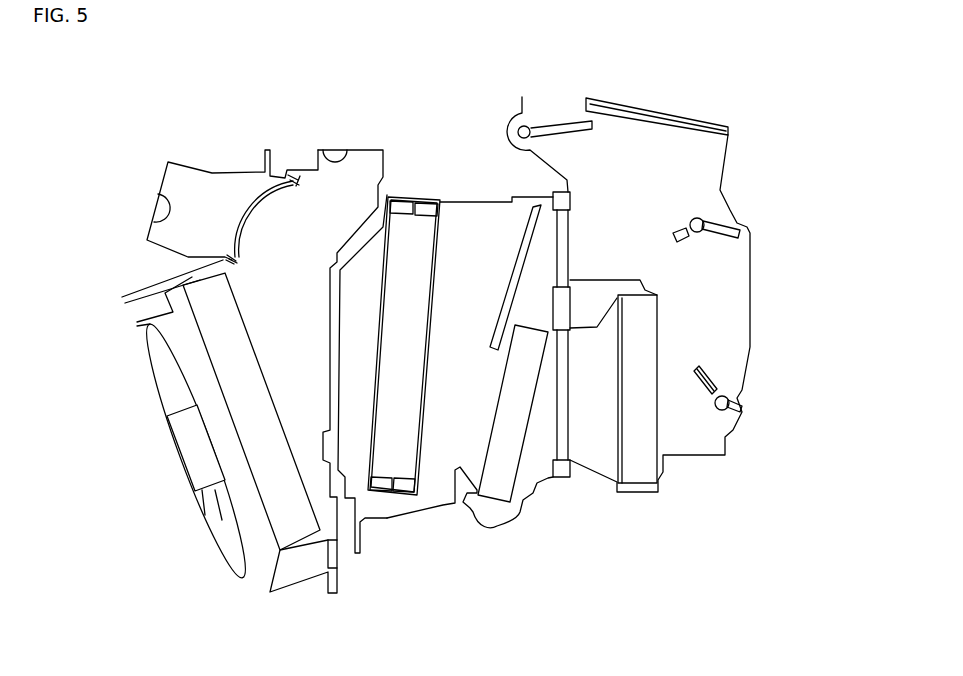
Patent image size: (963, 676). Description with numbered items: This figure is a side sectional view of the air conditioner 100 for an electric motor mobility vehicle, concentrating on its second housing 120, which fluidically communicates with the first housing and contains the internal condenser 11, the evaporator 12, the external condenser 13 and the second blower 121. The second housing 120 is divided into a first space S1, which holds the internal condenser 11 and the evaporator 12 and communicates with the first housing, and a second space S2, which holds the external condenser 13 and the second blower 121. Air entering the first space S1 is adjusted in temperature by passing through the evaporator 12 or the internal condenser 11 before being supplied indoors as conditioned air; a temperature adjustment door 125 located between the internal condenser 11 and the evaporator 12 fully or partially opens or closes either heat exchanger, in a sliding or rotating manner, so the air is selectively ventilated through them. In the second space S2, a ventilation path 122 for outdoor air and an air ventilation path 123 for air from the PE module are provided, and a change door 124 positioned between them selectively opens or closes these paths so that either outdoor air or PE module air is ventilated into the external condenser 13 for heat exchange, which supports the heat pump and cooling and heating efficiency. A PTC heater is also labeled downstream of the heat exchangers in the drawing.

The air conditioner 100 is at (462, 172).
The internal condenser 11 is at (513, 435).
The evaporator 12 is at (392, 448).
The external condenser 13 is at (288, 533).
The second housing 120 is at (428, 512).
The second blower 121 is at (197, 465).
The ventilation path of the outdoor air 122 is at (318, 150).
The air ventilation path of the PE module 123 is at (153, 220).
The change door 124 is at (243, 206).
The temperature adjustment door 125 is at (520, 262).
The first space S1 is at (475, 418).
The second space S2 is at (302, 423).
The PTC heater PTC is at (640, 422).